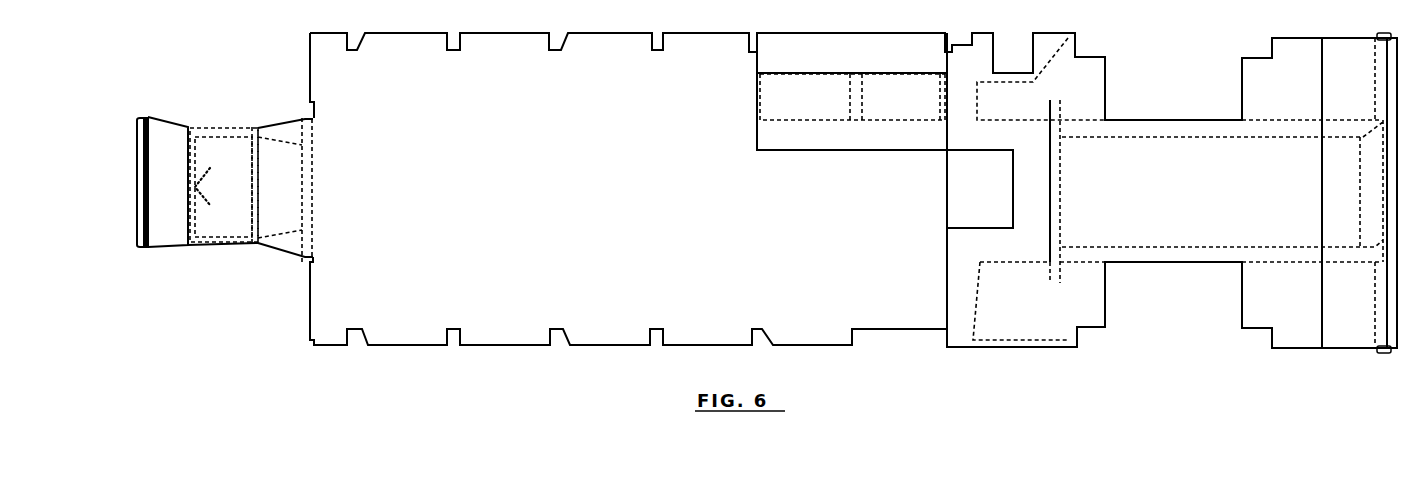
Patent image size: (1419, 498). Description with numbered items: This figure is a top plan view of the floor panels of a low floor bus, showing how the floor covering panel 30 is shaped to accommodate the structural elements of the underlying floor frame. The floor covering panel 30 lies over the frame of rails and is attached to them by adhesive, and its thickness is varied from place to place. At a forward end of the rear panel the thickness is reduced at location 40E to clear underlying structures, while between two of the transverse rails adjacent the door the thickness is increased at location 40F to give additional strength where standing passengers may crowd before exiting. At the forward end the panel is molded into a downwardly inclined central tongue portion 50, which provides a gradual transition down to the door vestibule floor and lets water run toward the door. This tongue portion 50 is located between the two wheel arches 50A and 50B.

The floor covering panel 30 is at (422, 332).
The reduced thickness location 40E is at (1138, 127).
The increased thickness location 40F is at (812, 103).
The central tongue portion 50 is at (137, 173).
The wheel arch 50A is at (240, 128).
The wheel arch 50B is at (232, 247).